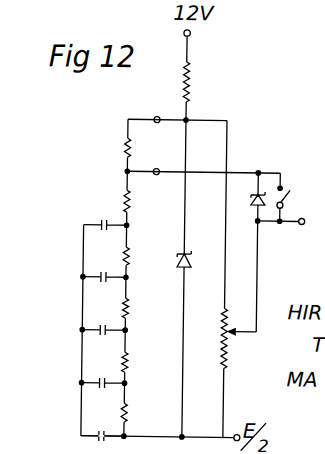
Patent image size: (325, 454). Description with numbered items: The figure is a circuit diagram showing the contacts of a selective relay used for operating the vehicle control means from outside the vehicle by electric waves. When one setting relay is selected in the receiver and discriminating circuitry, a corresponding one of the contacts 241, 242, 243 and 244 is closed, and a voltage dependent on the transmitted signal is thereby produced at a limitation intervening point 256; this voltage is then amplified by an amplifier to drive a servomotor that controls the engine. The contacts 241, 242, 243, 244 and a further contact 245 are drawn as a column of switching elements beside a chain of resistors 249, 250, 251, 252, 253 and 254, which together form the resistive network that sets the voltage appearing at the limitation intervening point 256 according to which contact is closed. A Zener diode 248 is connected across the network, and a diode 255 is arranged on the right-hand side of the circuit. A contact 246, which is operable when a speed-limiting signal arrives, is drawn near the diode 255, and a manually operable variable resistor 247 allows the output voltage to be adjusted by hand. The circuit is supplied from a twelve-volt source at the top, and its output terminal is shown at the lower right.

The contact 241 is at (102, 221).
The contact 242 is at (102, 274).
The contact 243 is at (102, 326).
The contact 244 is at (102, 380).
The capacitor 245 is at (102, 432).
The contact 246 is at (287, 198).
The manually operable variable resistor 247 is at (230, 350).
The Zener diode 248 is at (179, 268).
The resistor 249 is at (107, 147).
The resistor 250 is at (131, 203).
The resistor 251 is at (131, 257).
The resistor 252 is at (131, 309).
The resistor 253 is at (131, 360).
The resistor 254 is at (131, 412).
The diode 255 is at (246, 210).
The limitation intervening point 256 is at (160, 145).